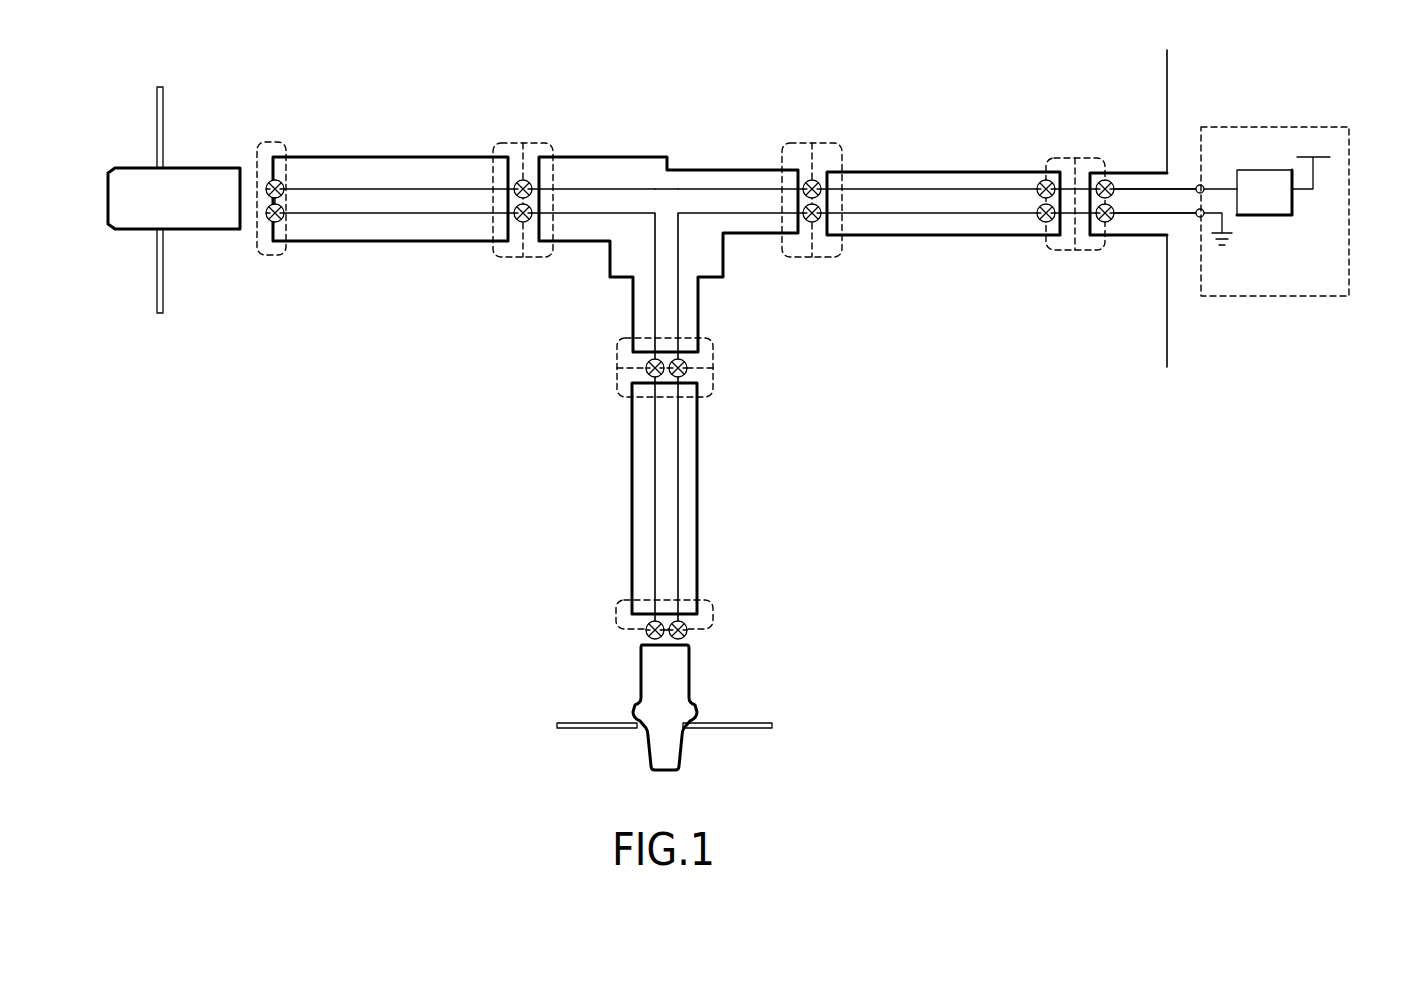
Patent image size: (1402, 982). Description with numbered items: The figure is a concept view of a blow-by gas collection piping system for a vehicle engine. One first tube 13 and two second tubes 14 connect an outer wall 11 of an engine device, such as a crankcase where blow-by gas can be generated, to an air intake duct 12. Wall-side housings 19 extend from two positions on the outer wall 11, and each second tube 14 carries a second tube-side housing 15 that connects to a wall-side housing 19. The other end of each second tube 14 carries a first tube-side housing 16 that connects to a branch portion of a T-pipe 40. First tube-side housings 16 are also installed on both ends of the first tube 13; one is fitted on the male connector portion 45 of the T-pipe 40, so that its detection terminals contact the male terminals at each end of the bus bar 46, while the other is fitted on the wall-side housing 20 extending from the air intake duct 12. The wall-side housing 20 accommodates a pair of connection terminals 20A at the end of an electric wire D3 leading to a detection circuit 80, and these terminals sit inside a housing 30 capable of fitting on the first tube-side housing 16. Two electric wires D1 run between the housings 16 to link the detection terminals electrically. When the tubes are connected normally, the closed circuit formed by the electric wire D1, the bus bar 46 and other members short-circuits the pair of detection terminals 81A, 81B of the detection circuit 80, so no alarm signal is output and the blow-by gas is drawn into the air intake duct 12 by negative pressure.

The outer wall 11 is at (158, 102).
The wall-side housing 19 is at (182, 168).
The second tube 14 is at (386, 243).
The electric wire D1 is at (320, 213).
The bus bar 46 is at (690, 210).
The second tube-side housing 15 is at (297, 133).
The first tube-side housing 16 is at (493, 143).
The male connector portion 45 is at (540, 143).
The T-pipe 40 is at (615, 168).
The first tube 13 is at (862, 235).
The housing 30 is at (1082, 158).
The connection terminals 20A is at (1115, 213).
The wall-side housing 20 is at (1155, 173).
The air intake duct 12 is at (1165, 330).
The electric wire D3 is at (1185, 189).
The detection terminal 81A is at (1205, 189).
The detection terminal 81B is at (1203, 218).
The detection circuit 80 is at (1283, 297).